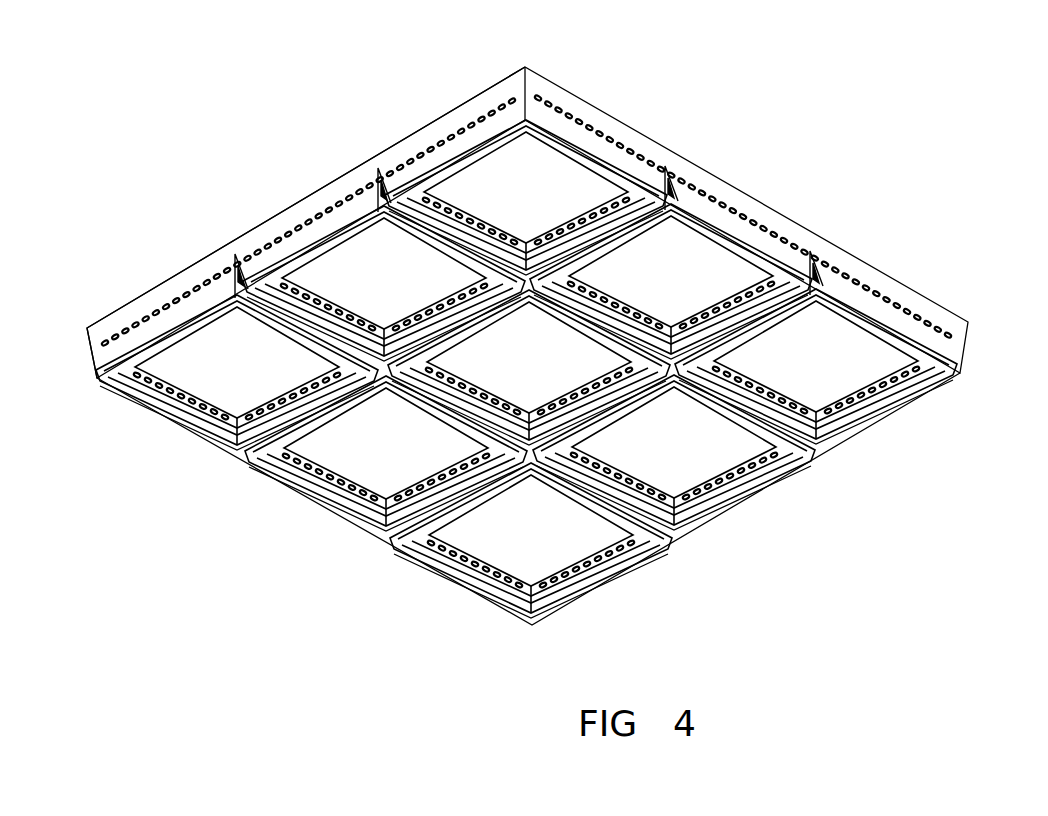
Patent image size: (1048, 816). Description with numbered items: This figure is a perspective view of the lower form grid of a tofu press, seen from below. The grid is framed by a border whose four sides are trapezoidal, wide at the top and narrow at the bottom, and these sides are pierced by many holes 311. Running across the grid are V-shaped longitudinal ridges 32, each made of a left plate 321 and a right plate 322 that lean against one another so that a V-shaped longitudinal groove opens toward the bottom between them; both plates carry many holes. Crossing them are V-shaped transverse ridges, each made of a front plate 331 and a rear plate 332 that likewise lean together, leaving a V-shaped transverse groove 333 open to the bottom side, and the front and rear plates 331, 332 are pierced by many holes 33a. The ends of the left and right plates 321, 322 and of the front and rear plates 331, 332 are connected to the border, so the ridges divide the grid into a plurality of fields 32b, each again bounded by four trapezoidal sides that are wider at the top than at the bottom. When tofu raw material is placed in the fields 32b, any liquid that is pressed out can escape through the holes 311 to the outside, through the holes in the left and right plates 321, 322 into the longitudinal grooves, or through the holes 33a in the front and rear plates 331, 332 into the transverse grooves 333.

The V-shaped longitudinal ridge 32 is at (822, 388).
The holes 311 is at (506, 104).
The left plate 321 is at (218, 272).
The field 32b is at (506, 170).
The right plate 322 is at (300, 352).
The front plate 331 is at (650, 182).
The rear plate 332 is at (660, 210).
The holes 33a is at (660, 526).
The V-shaped transverse groove 333 is at (362, 190).